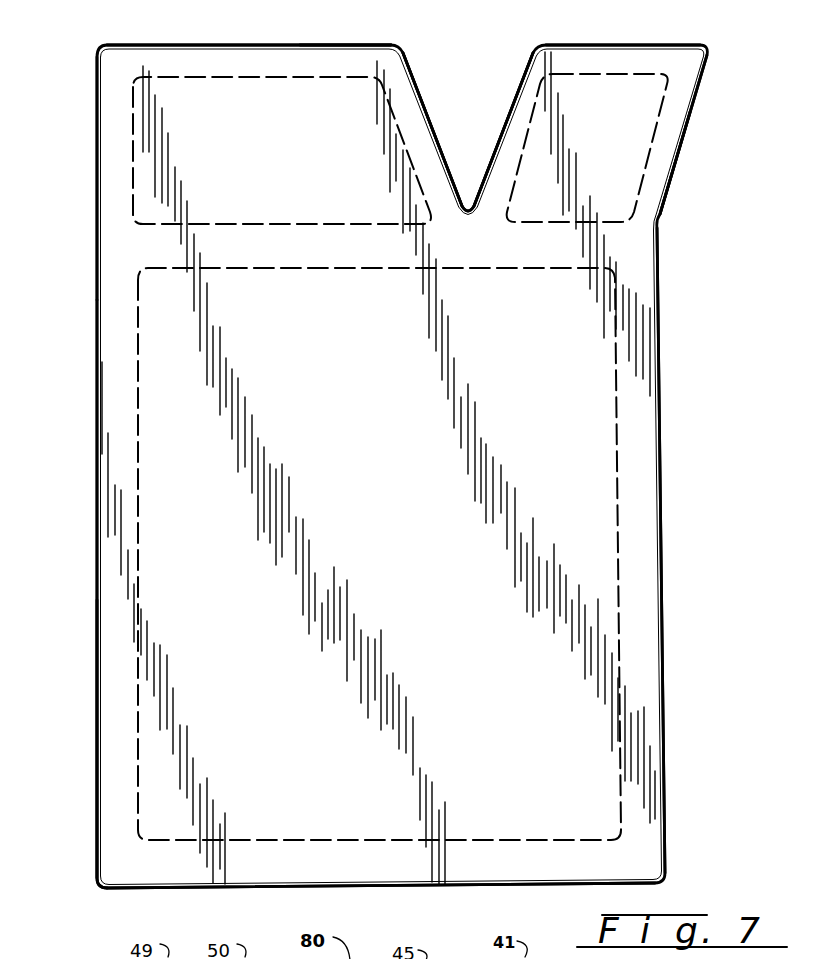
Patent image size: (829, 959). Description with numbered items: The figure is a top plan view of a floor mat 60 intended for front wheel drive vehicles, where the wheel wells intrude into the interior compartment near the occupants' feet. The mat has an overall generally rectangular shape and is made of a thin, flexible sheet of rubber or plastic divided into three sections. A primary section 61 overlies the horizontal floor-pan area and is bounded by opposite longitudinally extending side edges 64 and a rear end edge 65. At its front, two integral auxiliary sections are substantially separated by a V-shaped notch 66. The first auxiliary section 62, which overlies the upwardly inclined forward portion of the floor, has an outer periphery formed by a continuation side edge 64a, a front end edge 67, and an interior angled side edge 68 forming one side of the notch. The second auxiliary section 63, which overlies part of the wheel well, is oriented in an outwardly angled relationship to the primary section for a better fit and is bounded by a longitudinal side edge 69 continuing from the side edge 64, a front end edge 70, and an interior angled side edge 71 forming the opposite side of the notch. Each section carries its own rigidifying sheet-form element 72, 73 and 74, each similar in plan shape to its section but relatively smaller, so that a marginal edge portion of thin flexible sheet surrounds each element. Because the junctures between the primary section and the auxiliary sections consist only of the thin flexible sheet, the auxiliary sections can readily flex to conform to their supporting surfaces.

The floor mat 60 is at (96, 284).
The primary section 61 is at (110, 669).
The first auxiliary section 62 is at (117, 79).
The second auxiliary section 63 is at (672, 124).
The side edges 64 is at (97, 386).
The continuation side edge 64a is at (96, 133).
The rear end edge 65 is at (333, 887).
The V-shaped notch 66 is at (460, 137).
The front end edge 67 is at (334, 46).
The interior angled side edge 68 is at (409, 50).
The longitudinal side edge 69 is at (707, 75).
The front end edge 70 is at (612, 13).
The interior angled side edge 71 is at (517, 67).
The rigidifying sheet-form element 72 is at (618, 503).
The rigidifying sheet-form element 73 is at (273, 76).
The rigidifying sheet-form element 74 is at (643, 72).